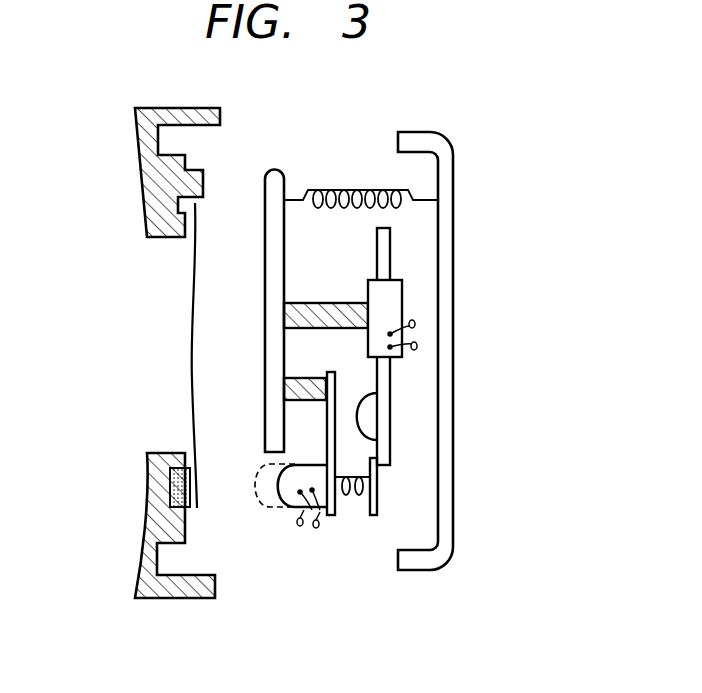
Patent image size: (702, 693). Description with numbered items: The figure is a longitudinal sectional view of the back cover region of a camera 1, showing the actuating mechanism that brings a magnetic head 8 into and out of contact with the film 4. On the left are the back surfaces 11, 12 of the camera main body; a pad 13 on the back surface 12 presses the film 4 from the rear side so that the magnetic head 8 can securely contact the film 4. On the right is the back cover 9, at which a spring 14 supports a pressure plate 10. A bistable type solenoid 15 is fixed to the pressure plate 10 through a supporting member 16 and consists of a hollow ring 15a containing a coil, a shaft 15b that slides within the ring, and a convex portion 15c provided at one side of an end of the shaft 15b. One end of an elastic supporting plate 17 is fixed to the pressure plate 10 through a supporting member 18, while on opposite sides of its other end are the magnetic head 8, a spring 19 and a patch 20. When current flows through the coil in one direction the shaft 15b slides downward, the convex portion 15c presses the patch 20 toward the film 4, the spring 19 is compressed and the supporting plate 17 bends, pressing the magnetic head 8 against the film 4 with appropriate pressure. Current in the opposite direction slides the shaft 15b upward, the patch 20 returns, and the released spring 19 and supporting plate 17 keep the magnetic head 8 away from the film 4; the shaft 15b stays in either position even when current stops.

The camera 1 is at (132, 603).
The film 4 is at (195, 285).
The magnetic head 8 is at (285, 510).
The back cover 9 is at (453, 537).
The pressure plate 10 is at (275, 178).
The back surface 11 is at (143, 133).
The back surface 12 is at (137, 582).
The pad 13 is at (170, 487).
The spring 14 is at (345, 190).
The bistable type solenoid 15 is at (407, 312).
The hollow ring 15a is at (377, 293).
The shaft 15b is at (393, 255).
The convex portion 15c is at (372, 413).
The supporting member 16 is at (310, 303).
The elastic supporting plate 17 is at (323, 432).
The supporting member 18 is at (307, 377).
The spring 19 is at (350, 508).
The patch 20 is at (380, 492).